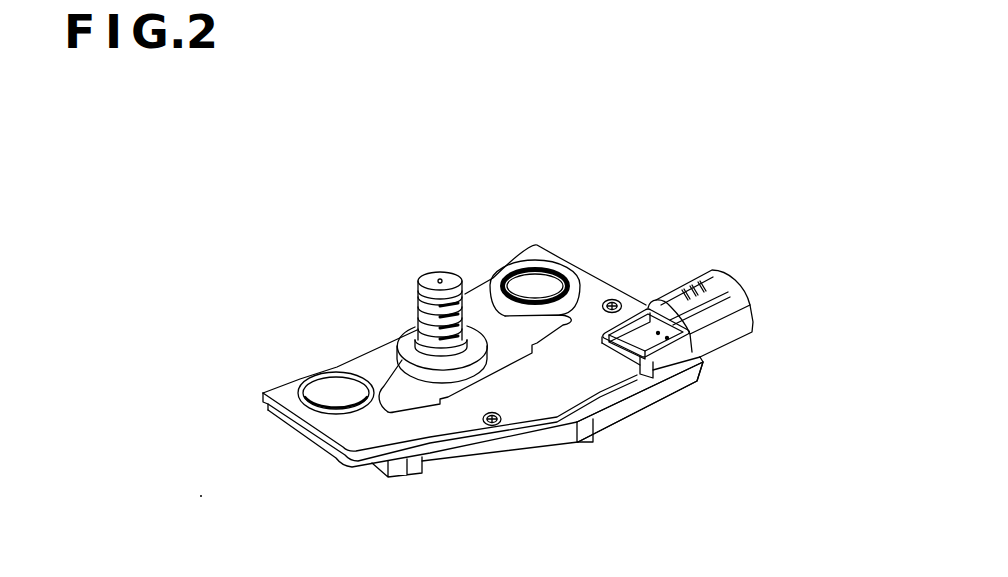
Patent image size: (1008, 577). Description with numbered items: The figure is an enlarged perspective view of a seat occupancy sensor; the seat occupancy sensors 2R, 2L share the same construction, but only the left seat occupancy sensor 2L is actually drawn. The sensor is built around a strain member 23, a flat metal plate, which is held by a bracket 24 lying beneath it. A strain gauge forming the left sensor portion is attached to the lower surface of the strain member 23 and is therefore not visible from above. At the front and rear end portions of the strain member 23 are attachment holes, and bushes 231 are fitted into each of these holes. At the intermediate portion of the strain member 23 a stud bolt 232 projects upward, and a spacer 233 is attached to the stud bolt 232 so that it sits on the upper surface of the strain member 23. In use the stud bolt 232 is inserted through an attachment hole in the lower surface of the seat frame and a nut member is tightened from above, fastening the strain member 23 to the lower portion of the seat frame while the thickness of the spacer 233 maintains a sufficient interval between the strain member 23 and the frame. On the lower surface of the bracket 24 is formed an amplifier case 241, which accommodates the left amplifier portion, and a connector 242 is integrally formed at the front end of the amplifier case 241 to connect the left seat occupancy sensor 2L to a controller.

The left seat occupancy sensor 2L is at (438, 168).
The right seat occupancy sensor 2R is at (562, 362).
The strain member 23 is at (482, 300).
The bushes 231 is at (336, 390).
The stud bolt 232 is at (425, 302).
The spacer 233 is at (398, 338).
The bracket 24 is at (402, 433).
The amplifier case 241 is at (623, 414).
The connector 242 is at (722, 318).